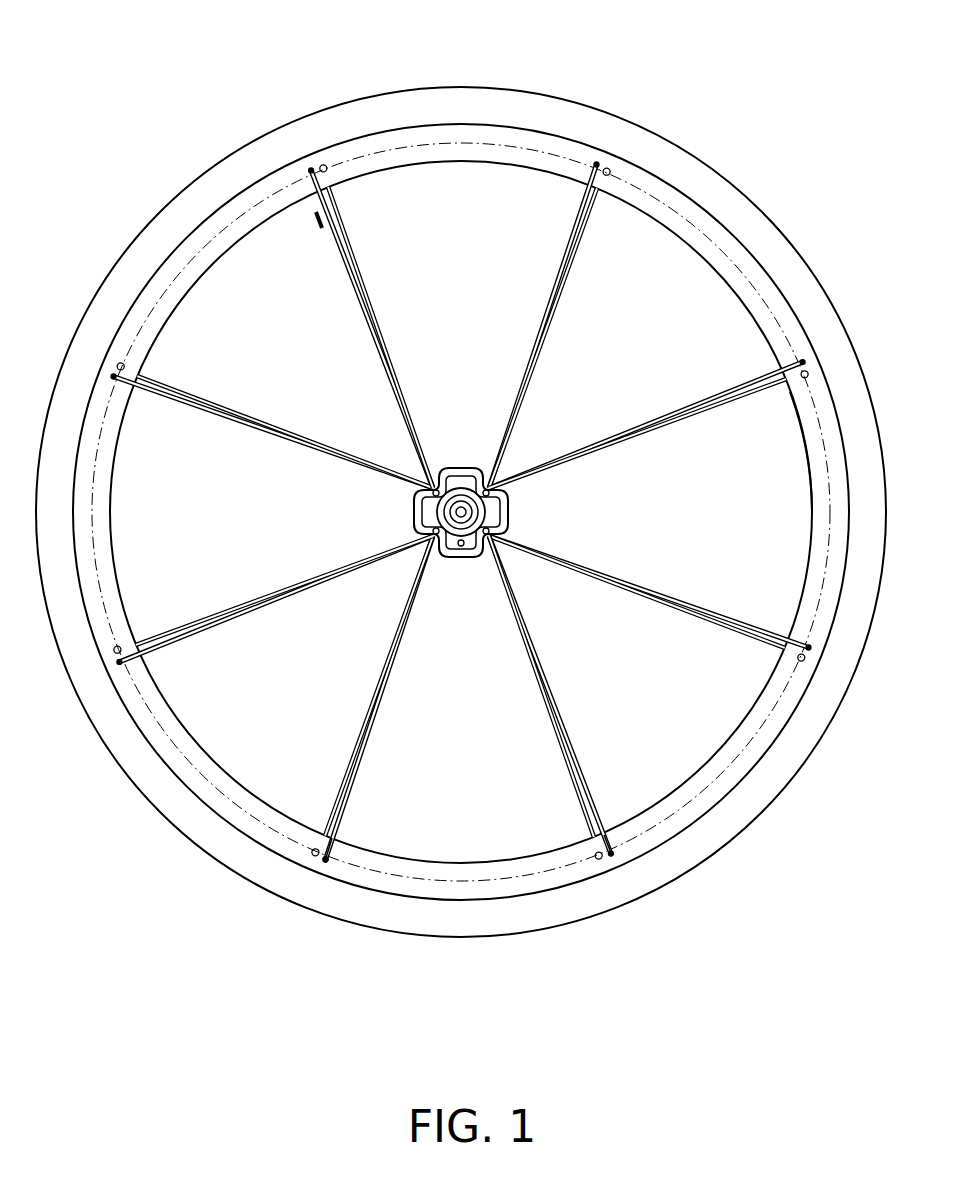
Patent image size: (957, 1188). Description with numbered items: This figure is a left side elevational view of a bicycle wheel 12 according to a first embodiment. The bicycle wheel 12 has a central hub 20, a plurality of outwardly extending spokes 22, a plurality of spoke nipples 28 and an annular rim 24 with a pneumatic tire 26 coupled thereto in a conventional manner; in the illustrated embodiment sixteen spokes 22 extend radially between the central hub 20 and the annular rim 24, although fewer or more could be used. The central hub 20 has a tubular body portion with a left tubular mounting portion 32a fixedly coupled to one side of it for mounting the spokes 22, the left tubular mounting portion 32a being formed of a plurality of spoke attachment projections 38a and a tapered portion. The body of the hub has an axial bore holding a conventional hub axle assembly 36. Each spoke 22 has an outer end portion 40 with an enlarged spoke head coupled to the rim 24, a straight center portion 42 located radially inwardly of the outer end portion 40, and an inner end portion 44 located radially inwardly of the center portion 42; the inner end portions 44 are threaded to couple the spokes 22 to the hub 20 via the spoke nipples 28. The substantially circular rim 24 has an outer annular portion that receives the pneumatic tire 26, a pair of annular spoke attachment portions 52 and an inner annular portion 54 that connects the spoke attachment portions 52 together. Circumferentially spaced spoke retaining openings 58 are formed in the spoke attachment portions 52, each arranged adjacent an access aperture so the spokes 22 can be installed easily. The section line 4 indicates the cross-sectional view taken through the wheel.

The bicycle wheel 12 is at (664, 88).
The section line 4- 4 is at (295, 143).
The pneumatic tire 26 is at (752, 214).
The annular rim 24 is at (690, 262).
The annular spoke attachment portions 52 is at (823, 432).
The inner annular portion 54 is at (811, 485).
The spokes 22 is at (343, 751).
The center portion 42 is at (565, 727).
The inner end portion 44 is at (508, 568).
The outer end portion 40 is at (598, 818).
The spoke retaining openings 58 is at (330, 862).
The central hub 20 is at (518, 507).
The spoke nipples 28 is at (413, 505).
The spoke attachment projections 38a is at (507, 533).
The left tubular mounting portion 32a is at (480, 575).
The hub axle assembly 36 is at (459, 504).